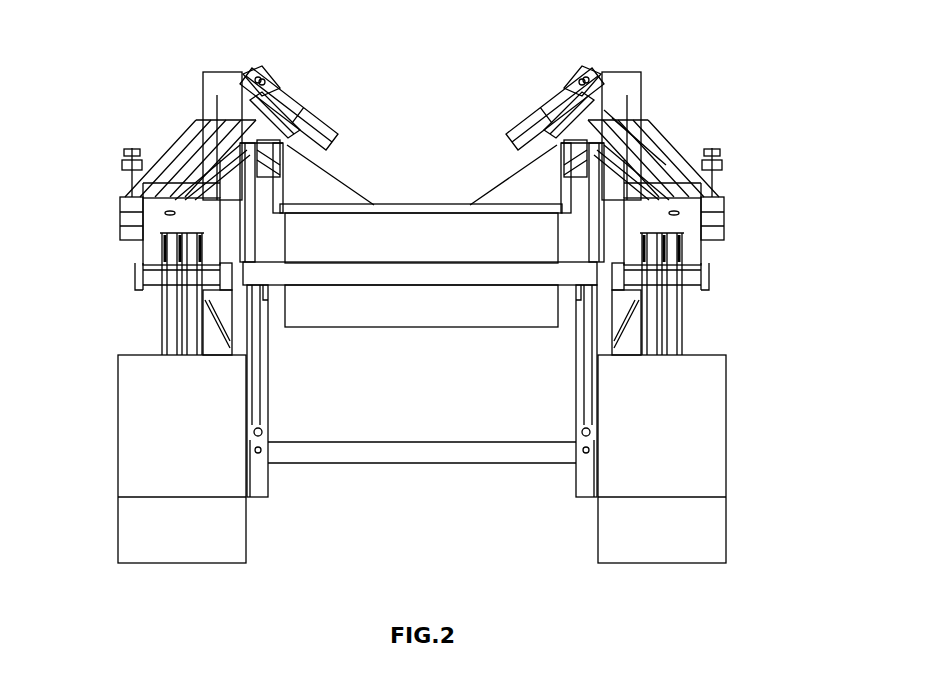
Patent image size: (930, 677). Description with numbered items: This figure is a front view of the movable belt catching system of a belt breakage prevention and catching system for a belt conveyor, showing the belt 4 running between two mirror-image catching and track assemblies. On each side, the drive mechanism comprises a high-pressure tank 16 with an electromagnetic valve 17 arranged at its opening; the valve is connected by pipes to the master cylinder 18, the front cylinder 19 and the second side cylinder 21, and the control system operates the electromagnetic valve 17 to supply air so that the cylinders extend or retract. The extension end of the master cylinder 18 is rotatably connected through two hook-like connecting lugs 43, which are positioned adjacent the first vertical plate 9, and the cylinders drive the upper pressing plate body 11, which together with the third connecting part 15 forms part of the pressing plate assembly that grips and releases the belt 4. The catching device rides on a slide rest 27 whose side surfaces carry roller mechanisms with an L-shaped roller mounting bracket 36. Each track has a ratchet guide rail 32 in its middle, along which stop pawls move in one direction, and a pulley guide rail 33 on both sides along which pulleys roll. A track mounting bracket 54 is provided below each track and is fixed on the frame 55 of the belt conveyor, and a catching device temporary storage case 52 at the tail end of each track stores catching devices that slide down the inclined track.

The belt 4 is at (420, 203).
The first vertical plate 9 is at (631, 85).
The upper pressing plate body 11 is at (520, 130).
The third connecting part 15 is at (243, 110).
The high-pressure tank 16 is at (713, 222).
The electromagnetic valve 17 is at (727, 160).
The master cylinder 18 is at (660, 155).
The front cylinder 19 is at (227, 175).
The second side cylinder 21 is at (205, 162).
The slide rest 27 is at (155, 246).
The ratchet guide rail 32 is at (662, 281).
The pulley guide rail 33 is at (673, 325).
The L-shaped roller mounting bracket 36 is at (137, 285).
The hook-like connecting lug 43 is at (247, 83).
The catching device temporary storage case 52 is at (693, 403).
The track mounting bracket 54 is at (220, 340).
The frame of the belt conveyor 55 is at (270, 450).